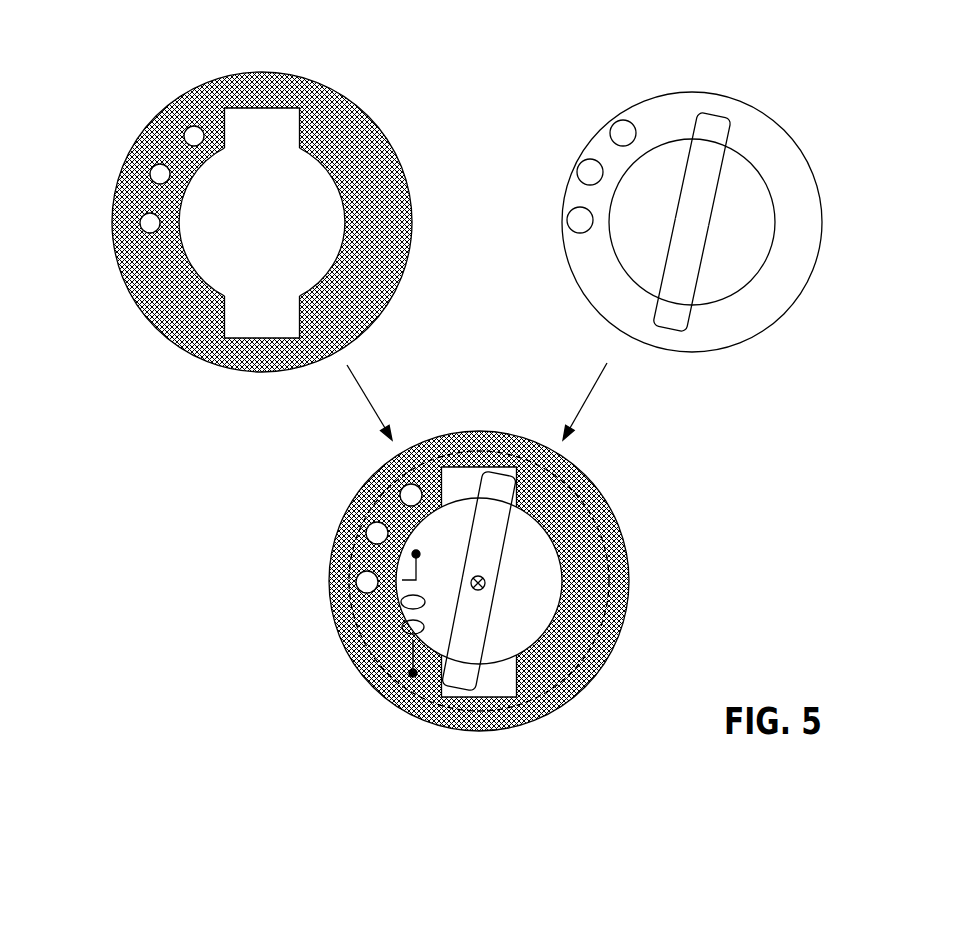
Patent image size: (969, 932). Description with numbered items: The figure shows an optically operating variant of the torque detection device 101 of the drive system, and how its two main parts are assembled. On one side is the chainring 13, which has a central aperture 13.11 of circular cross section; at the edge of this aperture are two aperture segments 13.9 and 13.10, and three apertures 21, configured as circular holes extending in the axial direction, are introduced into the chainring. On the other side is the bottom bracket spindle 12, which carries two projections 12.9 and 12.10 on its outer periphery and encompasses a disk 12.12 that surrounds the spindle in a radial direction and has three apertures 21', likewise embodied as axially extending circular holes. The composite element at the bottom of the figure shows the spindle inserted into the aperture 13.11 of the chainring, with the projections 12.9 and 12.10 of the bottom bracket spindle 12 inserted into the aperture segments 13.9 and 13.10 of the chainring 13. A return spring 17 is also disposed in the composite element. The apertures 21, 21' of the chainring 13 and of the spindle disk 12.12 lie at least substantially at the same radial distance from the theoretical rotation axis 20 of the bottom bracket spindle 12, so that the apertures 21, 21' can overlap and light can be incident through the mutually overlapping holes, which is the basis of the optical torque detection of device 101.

The bottom bracket spindle 12 is at (742, 188).
The projection 12.9 is at (712, 122).
The projection 12.10 is at (672, 320).
The disk 12.12 is at (778, 290).
The chainring 13 is at (352, 135).
The aperture segment 13.9 is at (253, 118).
The aperture segment 13.10 is at (253, 325).
The aperture 13.11 is at (282, 240).
The return spring 17 is at (340, 630).
The rotation axis 20 is at (486, 583).
The apertures 21 is at (242, 352).
The apertures 21' is at (563, 171).
The torque detection device 101 is at (657, 530).